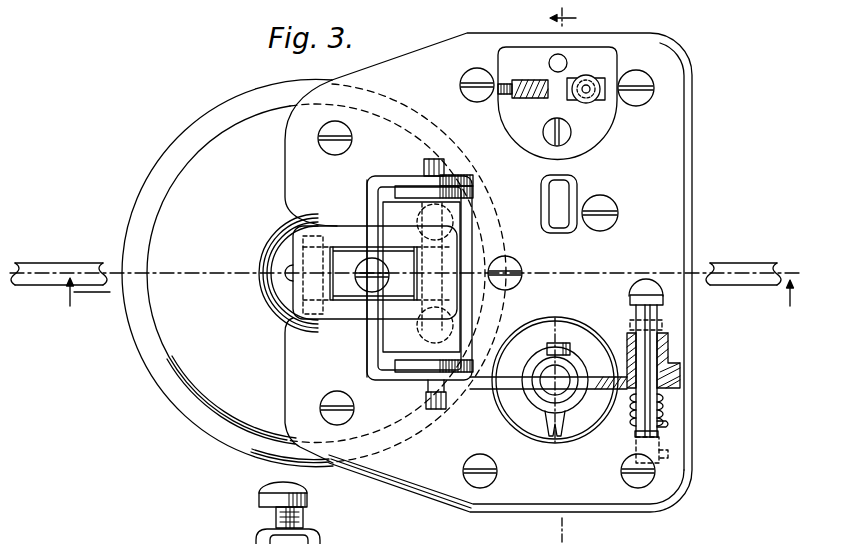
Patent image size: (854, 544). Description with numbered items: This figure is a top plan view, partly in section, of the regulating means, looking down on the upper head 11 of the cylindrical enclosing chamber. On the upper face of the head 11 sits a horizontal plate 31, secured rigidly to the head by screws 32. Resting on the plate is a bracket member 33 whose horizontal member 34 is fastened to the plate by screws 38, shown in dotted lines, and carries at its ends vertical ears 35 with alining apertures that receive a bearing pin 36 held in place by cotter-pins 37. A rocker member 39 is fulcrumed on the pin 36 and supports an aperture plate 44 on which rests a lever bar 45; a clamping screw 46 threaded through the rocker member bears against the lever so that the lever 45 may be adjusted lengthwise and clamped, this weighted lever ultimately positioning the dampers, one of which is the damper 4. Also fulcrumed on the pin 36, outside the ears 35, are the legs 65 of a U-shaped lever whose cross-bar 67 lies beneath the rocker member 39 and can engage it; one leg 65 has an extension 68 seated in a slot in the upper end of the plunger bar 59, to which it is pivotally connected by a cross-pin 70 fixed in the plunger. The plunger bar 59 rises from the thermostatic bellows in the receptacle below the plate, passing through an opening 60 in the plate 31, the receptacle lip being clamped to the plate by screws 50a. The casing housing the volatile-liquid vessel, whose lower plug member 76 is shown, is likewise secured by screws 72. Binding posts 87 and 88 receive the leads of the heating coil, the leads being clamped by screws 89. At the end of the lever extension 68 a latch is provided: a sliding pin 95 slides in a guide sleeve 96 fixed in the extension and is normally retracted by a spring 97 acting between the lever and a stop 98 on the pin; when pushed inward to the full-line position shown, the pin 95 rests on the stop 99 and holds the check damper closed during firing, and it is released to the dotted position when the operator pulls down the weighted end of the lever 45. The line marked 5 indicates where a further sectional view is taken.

The damper 4 is at (571, 18).
The section line 5- 5 is at (428, 302).
The upper head 11 is at (182, 335).
The horizontal plate 31 is at (663, 249).
The screws 32 is at (322, 124).
The bracket member 33 is at (479, 240).
The horizontal member 34 is at (466, 290).
The vertical ears 35 is at (410, 187).
The bearing pin 36 is at (441, 412).
The cotter-pins 37 is at (440, 159).
The screws 38 is at (457, 210).
The rocker member 39 is at (325, 268).
The aperture plate 44 is at (353, 226).
The lever bar 45 is at (36, 268).
The clamping screw 46 is at (309, 502).
The screws 50a is at (517, 261).
The plunger bar 59 is at (573, 358).
The opening 60 is at (572, 412).
The legs 65 is at (462, 178).
The cross-bar 67 is at (368, 203).
The extension 68 is at (494, 428).
The cross-pin 70 is at (549, 343).
The screws 72 is at (468, 85).
The lower plug member 76 is at (373, 288).
The binding post 87 is at (594, 74).
The binding post 88 is at (542, 80).
The screws 89 is at (511, 86).
The sliding pin 95 is at (648, 325).
The guide sleeve 96 is at (676, 368).
The spring 97 is at (664, 409).
The stop 98 is at (665, 425).
The stop 99 is at (650, 287).